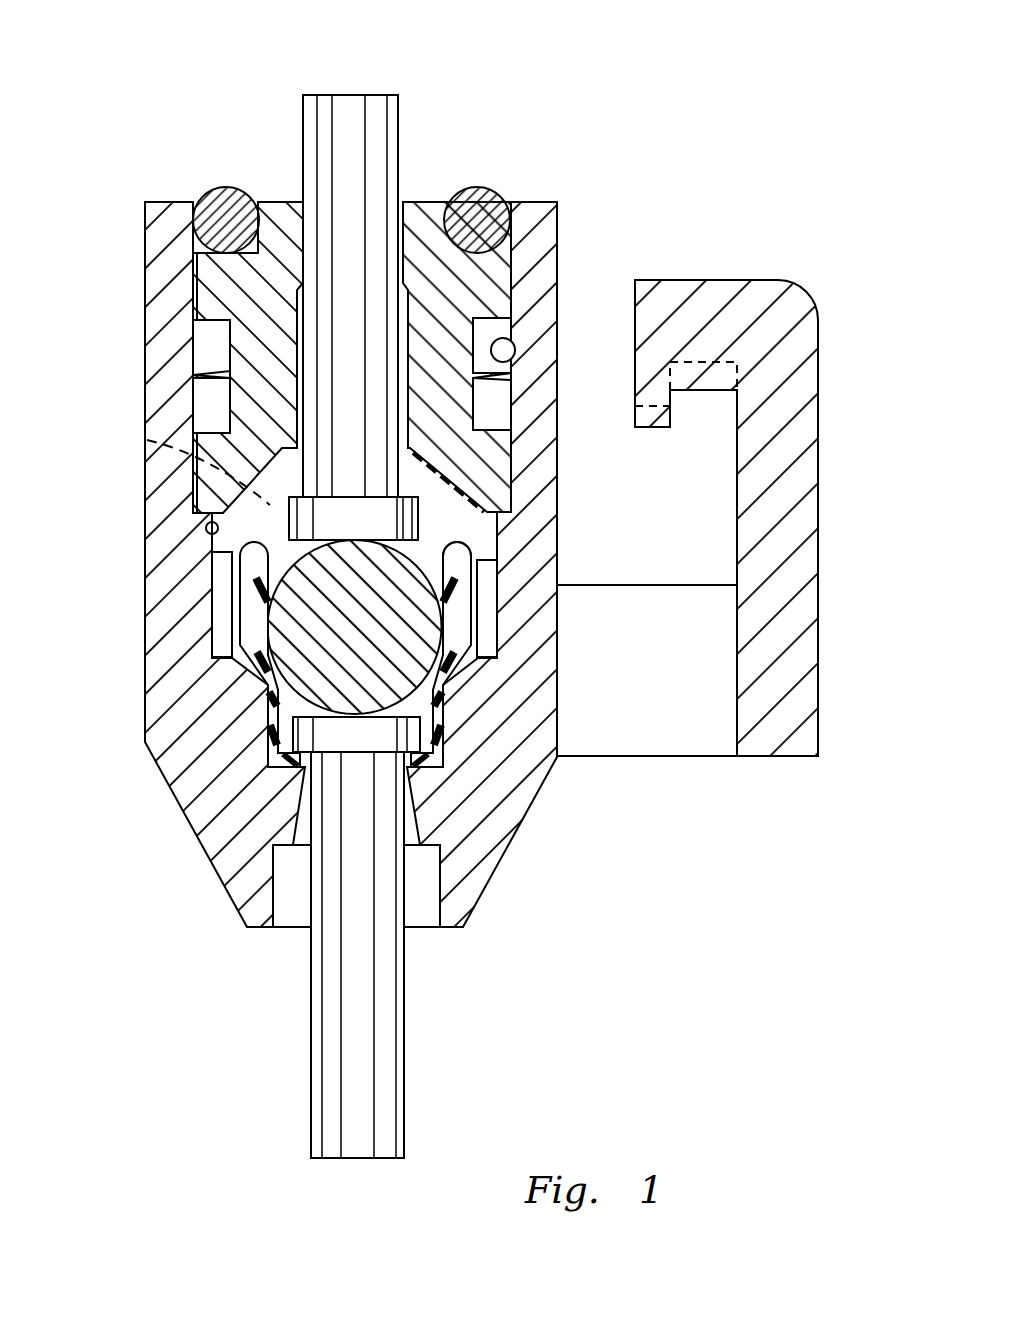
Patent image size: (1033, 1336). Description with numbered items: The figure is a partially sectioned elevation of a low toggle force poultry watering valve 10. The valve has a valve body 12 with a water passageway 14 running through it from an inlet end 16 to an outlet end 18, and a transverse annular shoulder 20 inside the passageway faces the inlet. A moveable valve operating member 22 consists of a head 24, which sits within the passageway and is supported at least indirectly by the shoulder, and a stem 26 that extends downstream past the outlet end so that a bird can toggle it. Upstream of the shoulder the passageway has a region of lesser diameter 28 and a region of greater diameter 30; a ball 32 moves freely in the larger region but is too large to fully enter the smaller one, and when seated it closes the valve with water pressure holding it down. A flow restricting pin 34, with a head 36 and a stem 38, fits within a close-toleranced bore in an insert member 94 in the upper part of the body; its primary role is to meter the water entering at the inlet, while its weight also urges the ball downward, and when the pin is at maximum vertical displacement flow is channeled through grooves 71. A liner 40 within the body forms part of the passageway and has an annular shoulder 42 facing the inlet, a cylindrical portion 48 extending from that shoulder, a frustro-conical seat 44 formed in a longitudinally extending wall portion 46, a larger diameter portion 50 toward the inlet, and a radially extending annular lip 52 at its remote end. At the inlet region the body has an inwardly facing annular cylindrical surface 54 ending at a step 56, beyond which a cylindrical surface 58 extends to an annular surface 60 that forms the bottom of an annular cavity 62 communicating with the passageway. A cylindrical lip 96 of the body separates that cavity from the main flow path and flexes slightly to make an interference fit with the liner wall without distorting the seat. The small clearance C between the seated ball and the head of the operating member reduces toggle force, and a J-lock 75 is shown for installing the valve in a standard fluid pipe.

The poultry watering valve 10 is at (549, 163).
The valve body 12 is at (552, 228).
The water passageway 14 is at (207, 548).
The inlet end 16 is at (297, 188).
The outlet end 18 is at (283, 933).
The transverse annular shoulder 20 is at (430, 772).
The valve operating member 22 is at (408, 1047).
The head 24 is at (265, 745).
The stem 26 is at (388, 1118).
The passageway region of lesser diameter 28 is at (272, 698).
The passageway region of greater diameter 30 is at (242, 560).
The ball 32 is at (303, 628).
The flow restricting pin 34 is at (405, 106).
The head 36 is at (300, 530).
The stem 38 is at (322, 112).
The liner 40 is at (452, 718).
The shoulder 42 is at (442, 750).
The seat 44 is at (456, 668).
The longitudinally extending wall portion 46 is at (468, 572).
The cylindrical portion 48 is at (454, 698).
The larger diameter portion 50 is at (462, 588).
The radially extending annular lip 52 is at (468, 552).
The annular cylindrical surface 54 is at (516, 352).
The step 56 is at (205, 526).
The cylindrical surface 58 is at (228, 538).
The annular surface 60 is at (230, 660).
The annular cavity 62 is at (222, 645).
The grooves 71 is at (147, 440).
The J-lock 75 is at (806, 445).
The insert member 94 is at (423, 198).
The cylindrical lip 96 is at (468, 622).
The clearance C is at (297, 740).